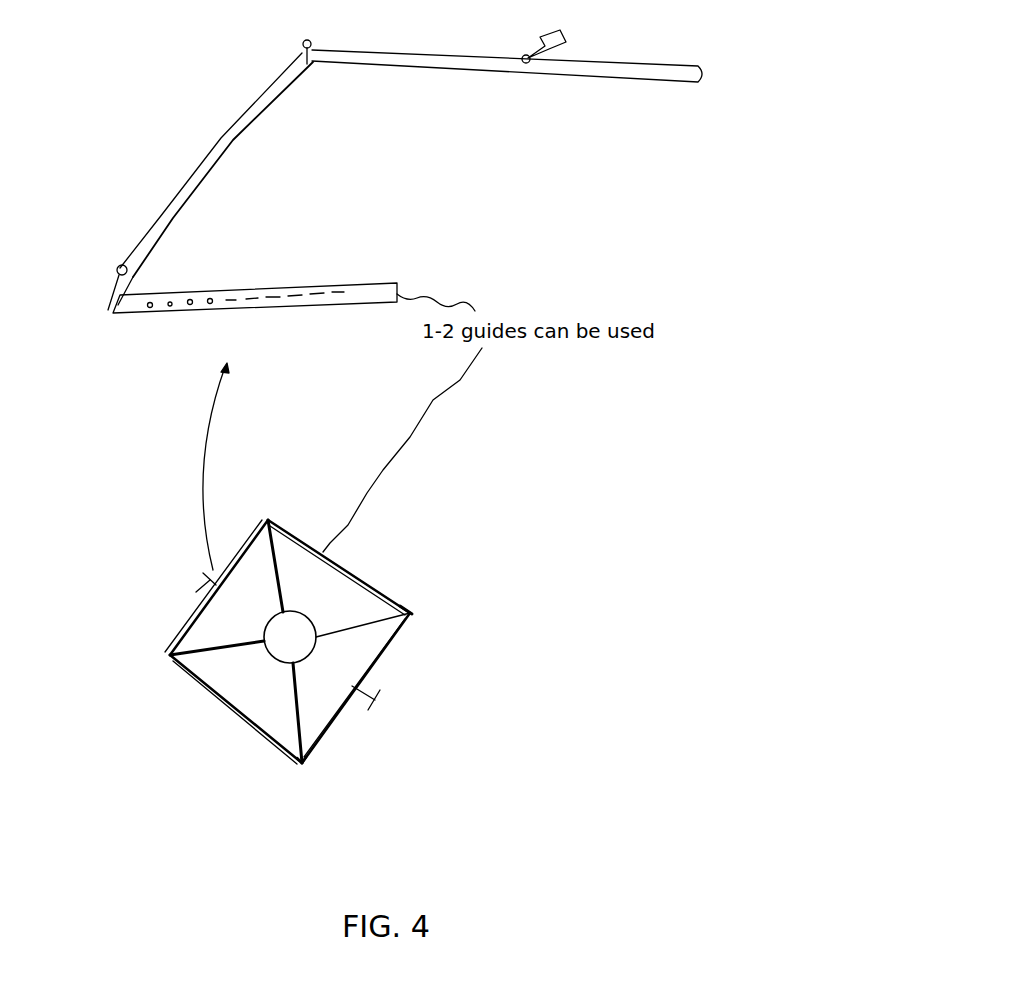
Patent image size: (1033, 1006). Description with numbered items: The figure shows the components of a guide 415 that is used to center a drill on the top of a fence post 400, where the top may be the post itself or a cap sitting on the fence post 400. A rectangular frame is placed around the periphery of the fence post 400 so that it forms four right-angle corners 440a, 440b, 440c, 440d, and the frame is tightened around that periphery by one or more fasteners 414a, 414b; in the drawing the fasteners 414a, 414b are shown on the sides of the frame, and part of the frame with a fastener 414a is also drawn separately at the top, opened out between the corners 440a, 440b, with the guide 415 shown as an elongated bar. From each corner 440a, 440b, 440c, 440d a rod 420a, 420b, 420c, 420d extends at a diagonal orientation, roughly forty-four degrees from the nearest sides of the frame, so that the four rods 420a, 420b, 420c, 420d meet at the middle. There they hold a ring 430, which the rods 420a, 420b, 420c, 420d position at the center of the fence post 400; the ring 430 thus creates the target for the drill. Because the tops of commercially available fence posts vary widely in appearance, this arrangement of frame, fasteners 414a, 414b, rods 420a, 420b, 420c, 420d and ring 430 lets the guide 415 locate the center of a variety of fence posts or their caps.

The fence post 400 is at (301, 621).
The fastener 414a is at (528, 63).
The fastener 414b is at (198, 588).
The guide 415 is at (295, 305).
The rod 420a is at (217, 638).
The rod 420b is at (278, 713).
The rod 420c is at (363, 643).
The rod 420d is at (300, 566).
The ring 430 is at (303, 613).
The corner 440a is at (110, 310).
The corner 440b is at (302, 50).
The corner 440c is at (168, 658).
The corner 440d is at (287, 577).